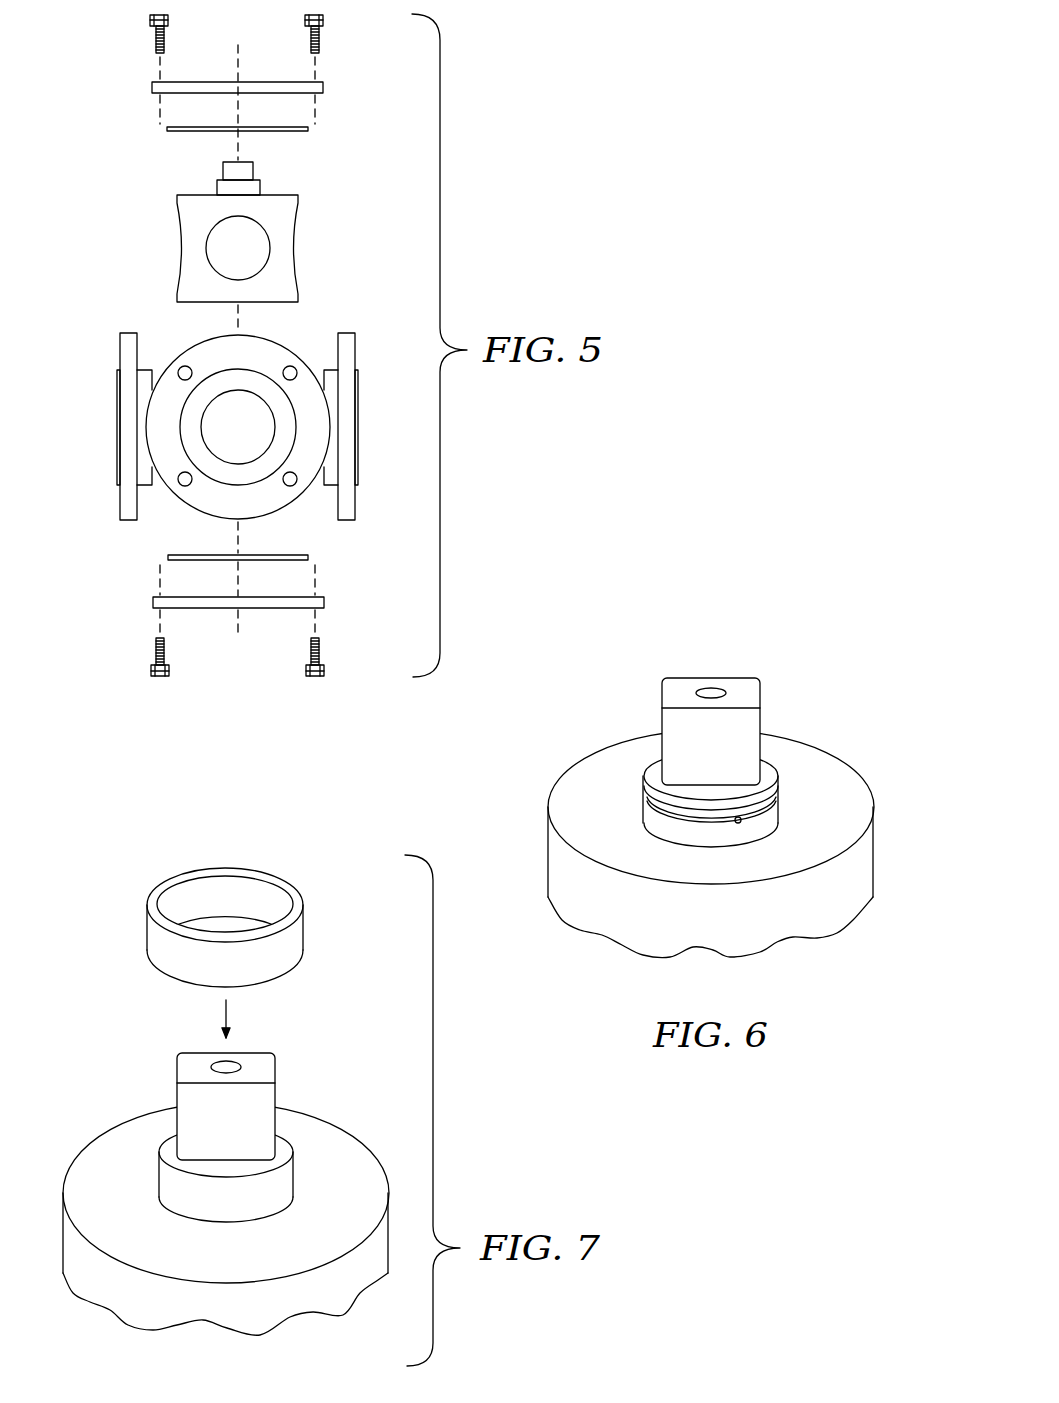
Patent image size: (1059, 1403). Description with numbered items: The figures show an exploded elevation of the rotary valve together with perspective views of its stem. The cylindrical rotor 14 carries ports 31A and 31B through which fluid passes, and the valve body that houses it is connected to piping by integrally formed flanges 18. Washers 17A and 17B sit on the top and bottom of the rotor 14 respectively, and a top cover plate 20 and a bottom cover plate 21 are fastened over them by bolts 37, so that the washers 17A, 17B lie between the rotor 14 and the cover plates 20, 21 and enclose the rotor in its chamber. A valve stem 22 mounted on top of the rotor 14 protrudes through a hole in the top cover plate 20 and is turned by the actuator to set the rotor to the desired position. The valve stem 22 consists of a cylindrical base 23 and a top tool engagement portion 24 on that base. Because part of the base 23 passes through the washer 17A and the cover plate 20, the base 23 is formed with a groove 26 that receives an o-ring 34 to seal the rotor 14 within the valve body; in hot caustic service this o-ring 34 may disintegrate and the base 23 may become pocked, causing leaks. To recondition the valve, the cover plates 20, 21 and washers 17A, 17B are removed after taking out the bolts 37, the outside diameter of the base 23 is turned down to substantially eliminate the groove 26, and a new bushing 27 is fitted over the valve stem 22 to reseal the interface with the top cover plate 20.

In FIG. 5, the rotor 14 is at (300, 210).
In FIG. 6, the rotor 14 is at (797, 753).
In FIG. 7, the rotor 14 is at (120, 1148).
In FIG. 5, the washer 17A is at (201, 132).
In FIG. 5, the washer 17B is at (168, 557).
In FIG. 5, the flanges 18 is at (120, 338).
In FIG. 5, the top cover plate 20 is at (152, 83).
In FIG. 5, the bottom cover plate 21 is at (153, 601).
In FIG. 5, the valve stem 22 is at (266, 176).
In FIG. 6, the valve stem 22 is at (770, 673).
In FIG. 7, the valve stem 22 is at (285, 1057).
In FIG. 6, the cylindrical base 23 is at (667, 830).
In FIG. 7, the cylindrical base 23 is at (293, 1170).
In FIG. 6, the top tool engagement portion 24 is at (662, 718).
In FIG. 7, the top tool engagement portion 24 is at (177, 1095).
In FIG. 6, the groove 26 is at (697, 823).
In FIG. 7, the bushing 27 is at (147, 928).
In FIG. 5, the port 31A is at (168, 250).
In FIG. 5, the port 31B is at (238, 248).
In FIG. 6, the o-ring 34 is at (752, 818).
In FIG. 5, the bolts 37 is at (156, 41).